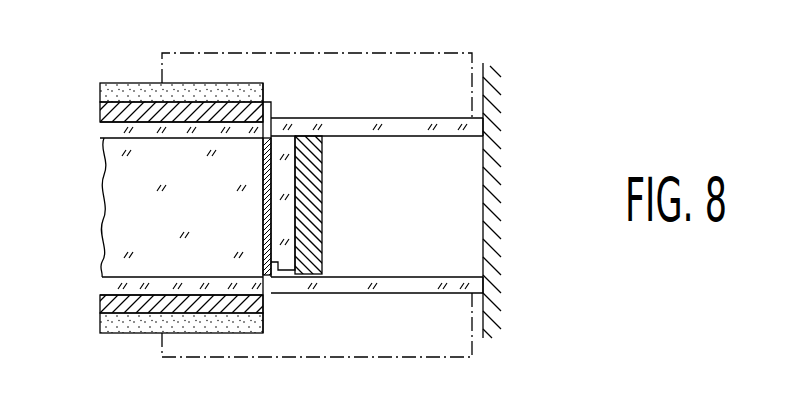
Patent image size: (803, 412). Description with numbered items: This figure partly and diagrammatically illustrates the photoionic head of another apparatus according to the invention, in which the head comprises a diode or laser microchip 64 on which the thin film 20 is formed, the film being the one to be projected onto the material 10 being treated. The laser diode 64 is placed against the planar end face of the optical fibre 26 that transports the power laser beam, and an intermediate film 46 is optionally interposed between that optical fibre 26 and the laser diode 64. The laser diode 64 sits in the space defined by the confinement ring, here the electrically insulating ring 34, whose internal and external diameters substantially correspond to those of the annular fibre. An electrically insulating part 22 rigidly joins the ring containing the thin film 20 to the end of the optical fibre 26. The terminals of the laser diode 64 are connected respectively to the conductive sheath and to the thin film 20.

The material 10 is at (490, 103).
The thin film 20 is at (315, 180).
The electrically insulating part 22 is at (345, 53).
The optical fibre 26 is at (92, 174).
The electrically insulating ring 34 is at (476, 285).
The intermediate film 46 is at (270, 295).
The laser diode 64 is at (284, 236).